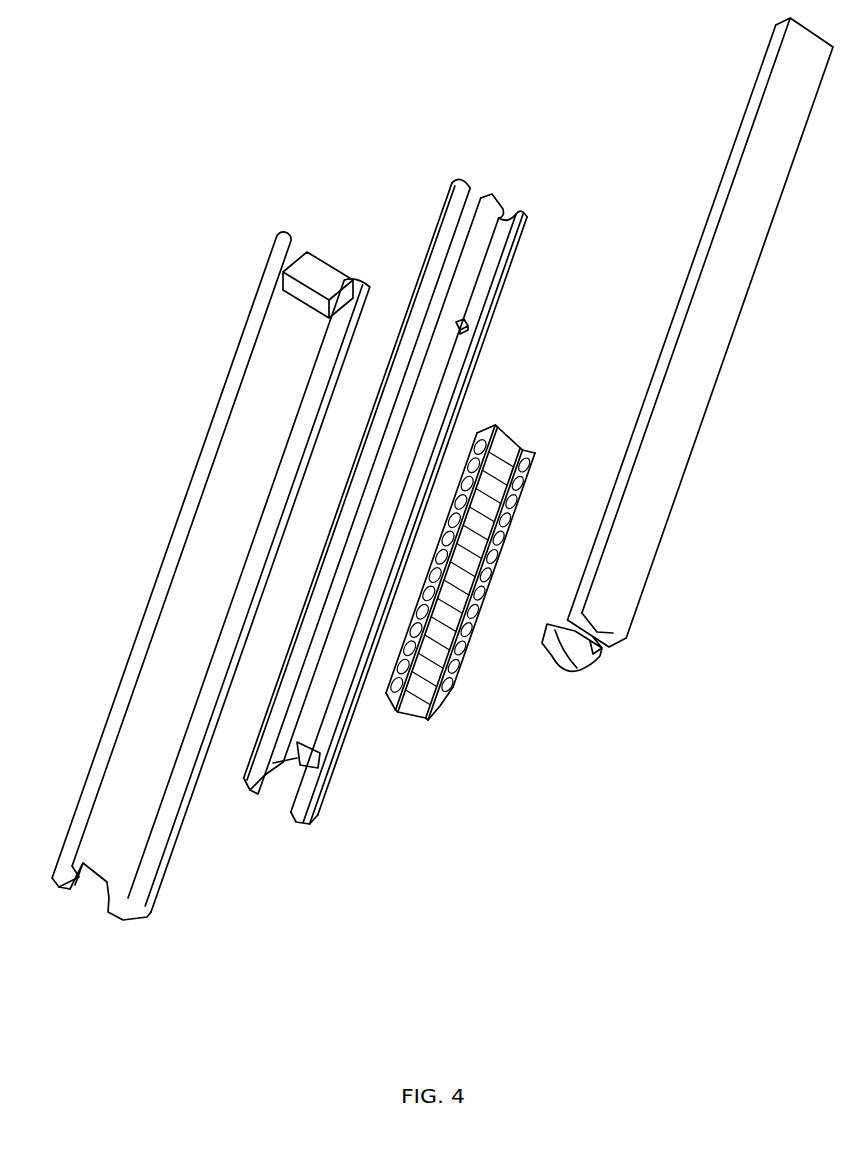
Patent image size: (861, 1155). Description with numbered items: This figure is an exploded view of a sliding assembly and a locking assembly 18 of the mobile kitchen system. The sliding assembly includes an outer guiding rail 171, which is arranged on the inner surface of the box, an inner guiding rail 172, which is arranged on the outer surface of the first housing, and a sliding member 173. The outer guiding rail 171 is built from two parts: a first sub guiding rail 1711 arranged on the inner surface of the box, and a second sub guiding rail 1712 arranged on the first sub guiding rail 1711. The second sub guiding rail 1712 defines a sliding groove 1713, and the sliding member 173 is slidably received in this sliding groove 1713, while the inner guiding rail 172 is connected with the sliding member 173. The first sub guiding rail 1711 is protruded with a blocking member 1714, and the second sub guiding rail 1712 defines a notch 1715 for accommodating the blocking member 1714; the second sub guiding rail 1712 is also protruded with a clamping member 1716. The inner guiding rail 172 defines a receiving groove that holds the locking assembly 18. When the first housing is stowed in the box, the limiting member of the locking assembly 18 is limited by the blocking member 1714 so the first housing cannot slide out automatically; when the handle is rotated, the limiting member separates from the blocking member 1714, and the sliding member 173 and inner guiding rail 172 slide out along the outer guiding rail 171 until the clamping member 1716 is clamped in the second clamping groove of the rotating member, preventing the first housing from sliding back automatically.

The outer guiding rail 171 is at (211, 621).
The first sub guiding rail 1711 is at (213, 418).
The second sub guiding rail 1712 is at (374, 549).
The sliding groove 1713 is at (400, 504).
The blocking member 1714 is at (110, 898).
The notch 1715 is at (280, 808).
The clamping member 1716 is at (322, 767).
The inner guiding rail 172 is at (638, 552).
The sliding member 173 is at (437, 702).
The locking assembly 18 is at (578, 645).